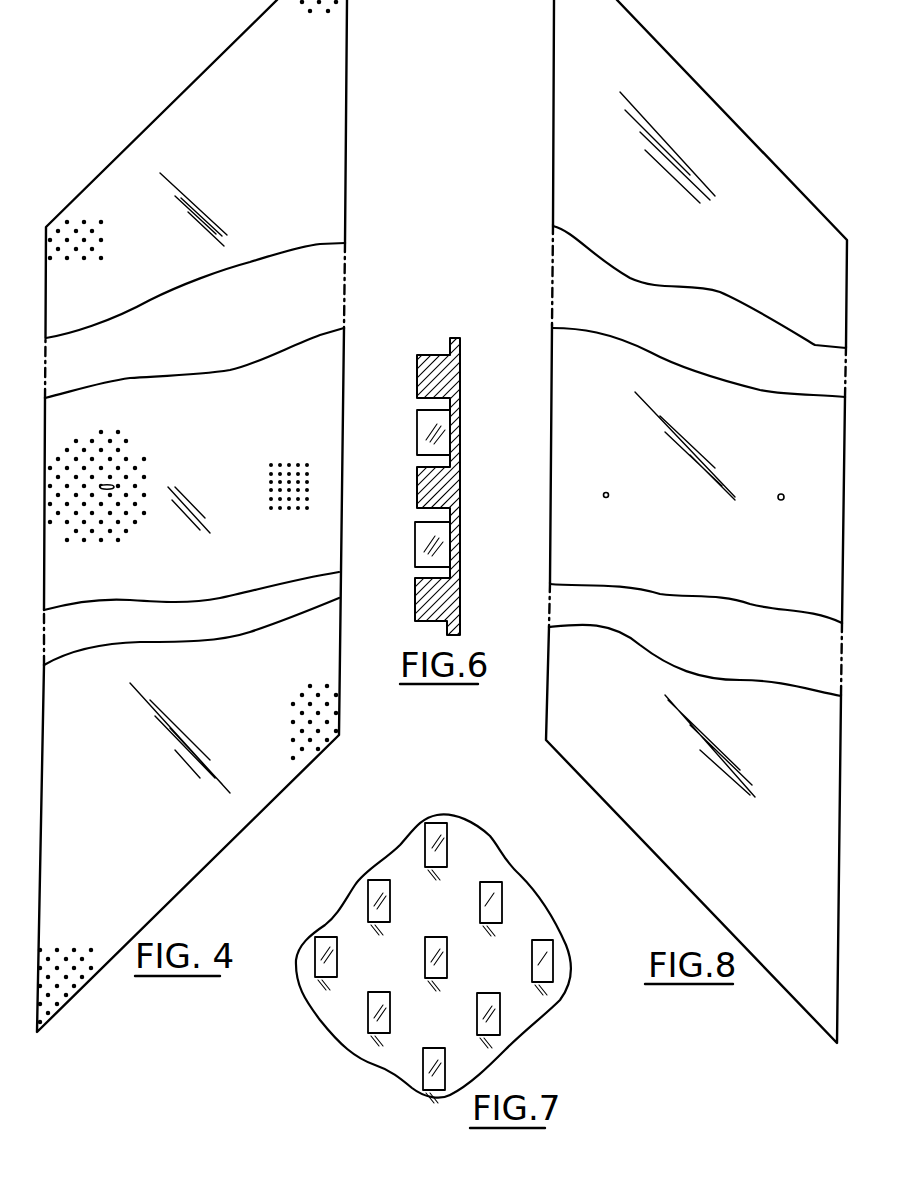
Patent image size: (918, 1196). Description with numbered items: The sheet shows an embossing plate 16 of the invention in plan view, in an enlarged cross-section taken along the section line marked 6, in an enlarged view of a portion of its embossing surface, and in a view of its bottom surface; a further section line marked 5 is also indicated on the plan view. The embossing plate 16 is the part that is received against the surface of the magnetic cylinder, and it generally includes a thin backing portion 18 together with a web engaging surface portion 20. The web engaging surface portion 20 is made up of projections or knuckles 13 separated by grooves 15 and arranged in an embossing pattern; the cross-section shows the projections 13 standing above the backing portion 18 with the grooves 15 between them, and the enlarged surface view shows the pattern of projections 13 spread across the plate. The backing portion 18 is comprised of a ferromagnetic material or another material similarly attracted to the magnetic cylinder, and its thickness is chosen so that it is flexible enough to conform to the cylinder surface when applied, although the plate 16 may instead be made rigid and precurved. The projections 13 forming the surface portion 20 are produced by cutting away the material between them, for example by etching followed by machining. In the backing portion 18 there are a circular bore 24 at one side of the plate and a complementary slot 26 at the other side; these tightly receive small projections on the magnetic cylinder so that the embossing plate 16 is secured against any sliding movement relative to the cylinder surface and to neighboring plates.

In FIG. 4, the projections 13 is at (60, 461).
In FIG. 6, the projections 13 is at (417, 483).
In FIG. 7, the projections 13 is at (390, 910).
In FIG. 6, the grooves 15 is at (441, 534).
In FIG. 7, the grooves 15 is at (476, 962).
In FIG. 4, the embossing plate 16 is at (345, 243).
In FIG. 6, the embossing plate 16 is at (460, 472).
In FIG. 7, the embossing plate 16 is at (568, 963).
In FIG. 8, the embossing plate 16 is at (553, 226).
In FIG. 4, the backing portion 18 is at (252, 256).
In FIG. 6, the backing portion 18 is at (455, 533).
In FIG. 7, the backing portion 18 is at (522, 1010).
In FIG. 8, the backing portion 18 is at (662, 207).
In FIG. 4, the web engaging surface portion 20 is at (77, 222).
In FIG. 6, the web engaging surface portion 20 is at (415, 598).
In FIG. 7, the web engaging surface portion 20 is at (492, 902).
In FIG. 4, the circular bore 24 is at (278, 487).
In FIG. 8, the circular bore 24 is at (608, 494).
In FIG. 4, the slot 26 is at (108, 485).
In FIG. 8, the slot 26 is at (782, 500).
In FIG. 4, the section line 5 is at (259, 437).
In FIG. 4, the section line 6 is at (327, 464).